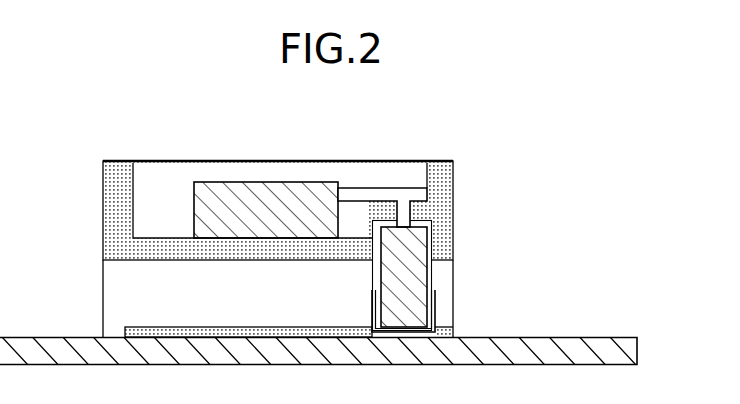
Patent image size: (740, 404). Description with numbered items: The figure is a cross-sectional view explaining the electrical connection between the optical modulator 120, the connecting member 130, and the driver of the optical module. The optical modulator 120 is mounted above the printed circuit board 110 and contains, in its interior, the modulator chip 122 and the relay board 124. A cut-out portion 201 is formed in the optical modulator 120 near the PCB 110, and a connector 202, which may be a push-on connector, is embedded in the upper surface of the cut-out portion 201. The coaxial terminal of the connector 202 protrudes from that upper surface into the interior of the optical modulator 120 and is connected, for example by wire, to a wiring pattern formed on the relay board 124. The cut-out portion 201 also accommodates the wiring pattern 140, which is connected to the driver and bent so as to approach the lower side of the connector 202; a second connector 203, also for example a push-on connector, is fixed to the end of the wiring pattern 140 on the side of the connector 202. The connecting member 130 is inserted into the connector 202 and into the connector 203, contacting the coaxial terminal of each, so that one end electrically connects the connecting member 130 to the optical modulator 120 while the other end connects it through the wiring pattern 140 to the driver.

The printed circuit board 110 is at (617, 349).
The optical modulator 120 is at (103, 207).
The modulator chip 122 is at (270, 182).
The relay board 124 is at (378, 188).
The connecting member 130 is at (427, 278).
The wiring pattern 140 is at (270, 327).
The cut-out portion 201 is at (126, 288).
The connector 202 is at (432, 222).
The connector 203 is at (433, 317).